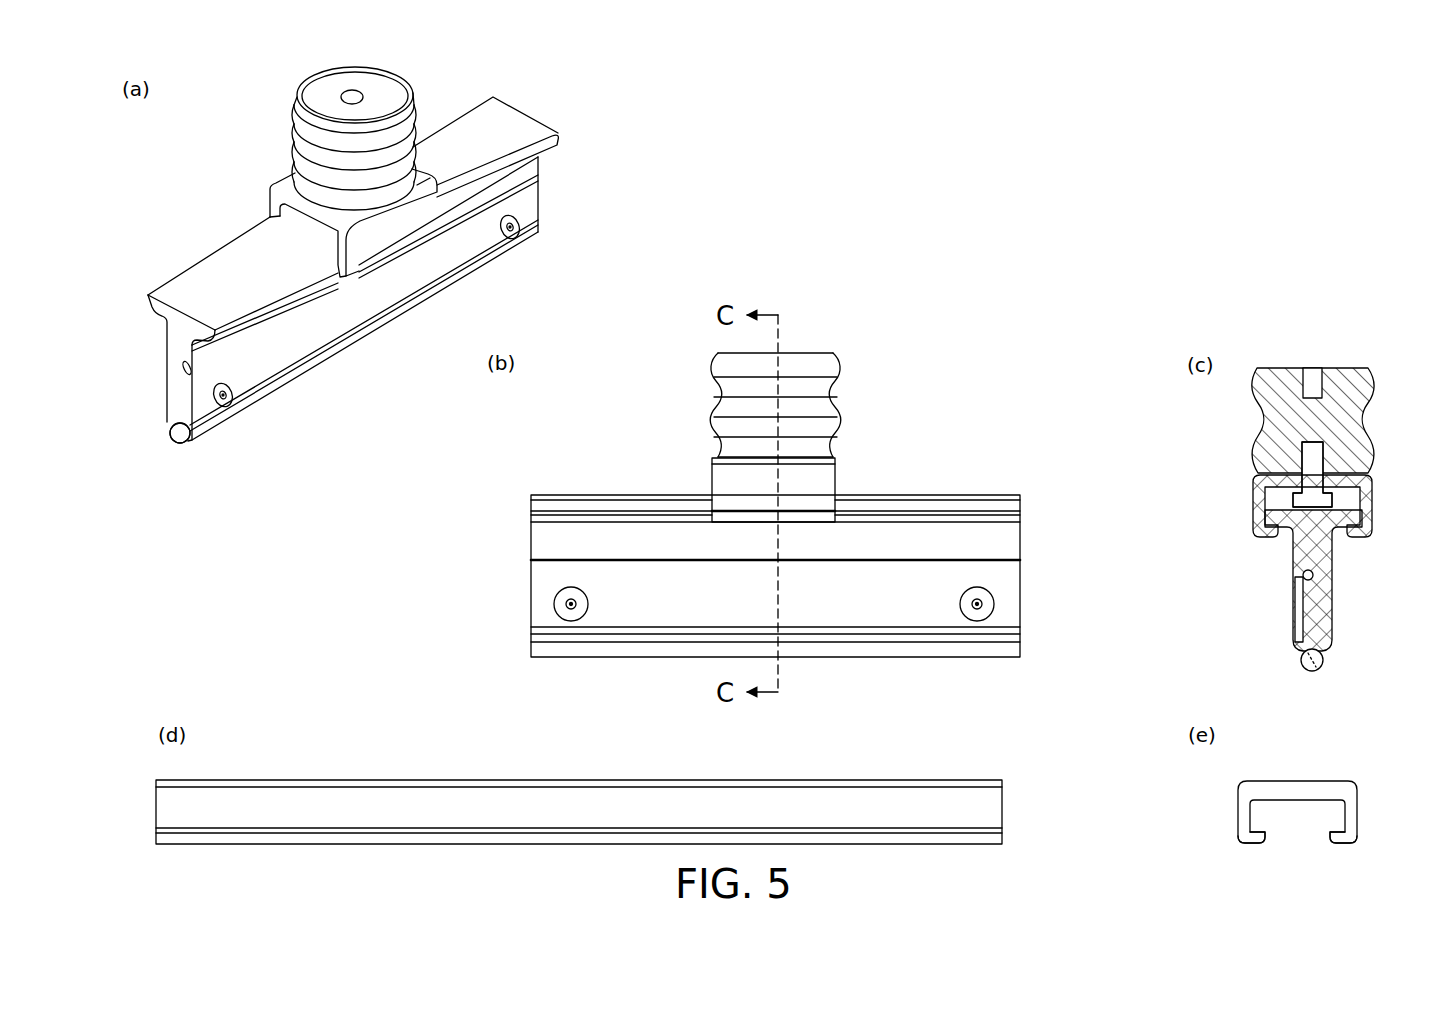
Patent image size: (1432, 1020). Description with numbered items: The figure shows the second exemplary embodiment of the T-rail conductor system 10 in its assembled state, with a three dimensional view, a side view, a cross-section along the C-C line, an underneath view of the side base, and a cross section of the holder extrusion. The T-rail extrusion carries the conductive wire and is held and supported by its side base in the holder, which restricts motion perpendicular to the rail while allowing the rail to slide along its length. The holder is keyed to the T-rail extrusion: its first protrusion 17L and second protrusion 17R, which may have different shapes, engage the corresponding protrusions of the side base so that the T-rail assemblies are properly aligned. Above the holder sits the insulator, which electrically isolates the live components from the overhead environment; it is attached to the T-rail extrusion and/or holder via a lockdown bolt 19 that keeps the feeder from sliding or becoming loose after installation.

The connector assembly 10 is at (432, 77).
The pin 19 is at (1318, 465).
The clip left hook 17L is at (1250, 838).
The clip right hook 17R is at (1350, 838).